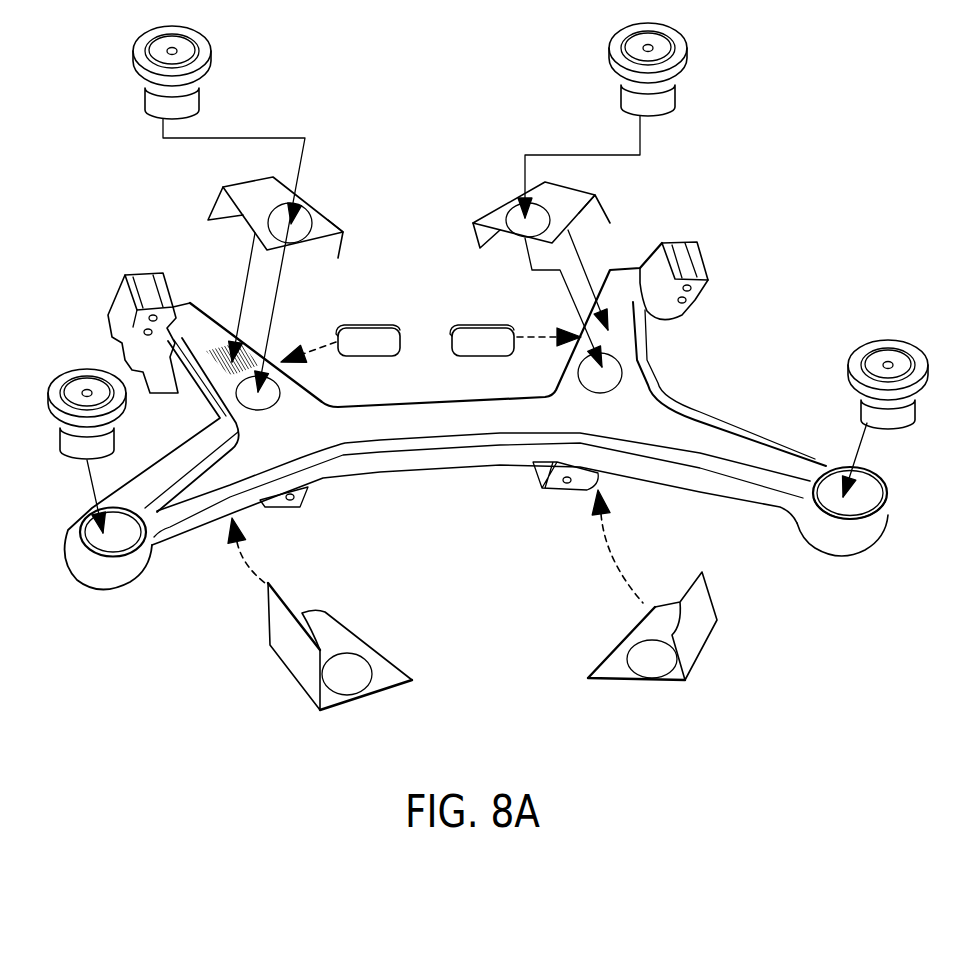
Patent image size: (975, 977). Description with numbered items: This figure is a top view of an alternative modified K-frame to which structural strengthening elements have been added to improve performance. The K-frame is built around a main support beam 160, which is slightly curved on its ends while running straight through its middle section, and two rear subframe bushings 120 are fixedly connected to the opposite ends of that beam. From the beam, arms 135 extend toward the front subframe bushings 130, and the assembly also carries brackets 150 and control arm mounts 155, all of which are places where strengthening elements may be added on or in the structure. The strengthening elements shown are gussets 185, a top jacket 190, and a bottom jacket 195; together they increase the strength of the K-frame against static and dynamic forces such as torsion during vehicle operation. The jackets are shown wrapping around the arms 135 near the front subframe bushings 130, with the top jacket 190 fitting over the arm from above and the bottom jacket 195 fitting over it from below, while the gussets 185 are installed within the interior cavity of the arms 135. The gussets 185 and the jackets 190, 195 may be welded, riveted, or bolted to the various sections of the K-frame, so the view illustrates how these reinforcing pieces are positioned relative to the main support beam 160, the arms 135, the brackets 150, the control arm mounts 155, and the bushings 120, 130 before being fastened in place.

The rear subframe bushing 120 is at (56, 383).
The front subframe bushing 130 is at (212, 50).
The arm 135 is at (210, 412).
The bracket 150 is at (140, 340).
The control arm mount 155 is at (135, 283).
The main support beam 160 is at (395, 433).
The gusset 185 is at (363, 328).
The top jacket 190 is at (320, 220).
The bottom jacket 195 is at (337, 638).